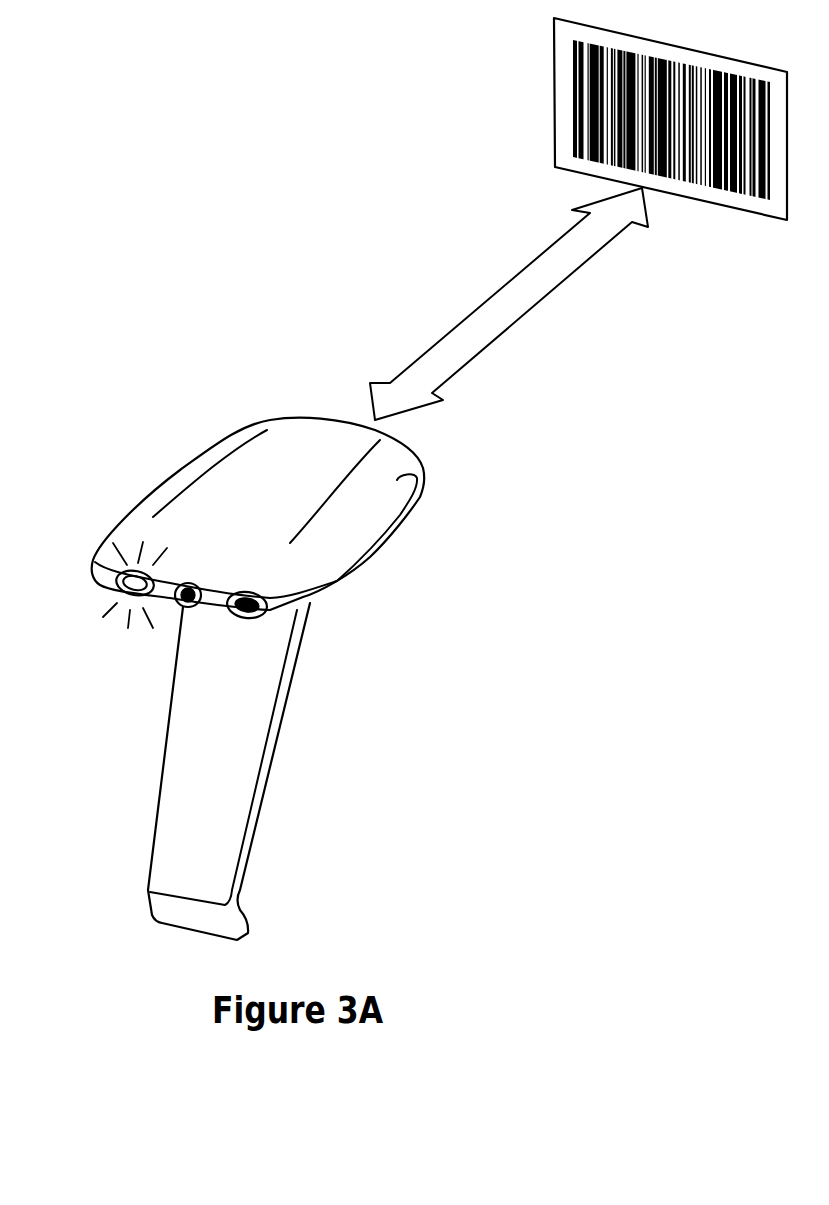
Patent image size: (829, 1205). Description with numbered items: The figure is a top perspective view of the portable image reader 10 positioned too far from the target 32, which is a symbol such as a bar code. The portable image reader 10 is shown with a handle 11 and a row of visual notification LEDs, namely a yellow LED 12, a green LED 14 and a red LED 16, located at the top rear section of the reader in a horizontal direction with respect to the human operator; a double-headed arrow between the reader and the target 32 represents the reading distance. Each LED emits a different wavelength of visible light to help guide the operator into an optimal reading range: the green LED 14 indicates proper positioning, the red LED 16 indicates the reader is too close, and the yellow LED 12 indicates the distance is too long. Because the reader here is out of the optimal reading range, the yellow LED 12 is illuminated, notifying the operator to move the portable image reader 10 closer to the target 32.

The portable image reader 10 is at (165, 462).
The handle 11 is at (182, 797).
The yellow LED 12 is at (117, 593).
The green LED 14 is at (183, 608).
The red LED 16 is at (250, 620).
The target 32 is at (735, 217).